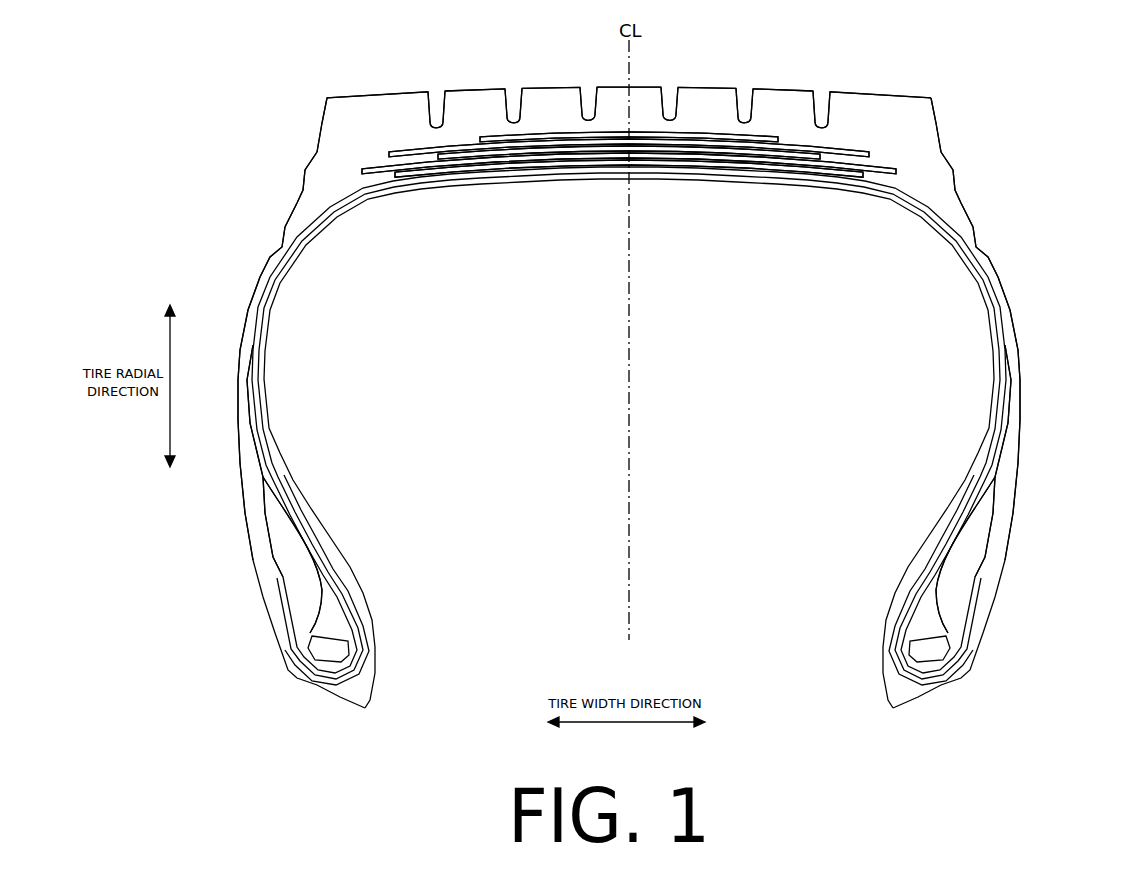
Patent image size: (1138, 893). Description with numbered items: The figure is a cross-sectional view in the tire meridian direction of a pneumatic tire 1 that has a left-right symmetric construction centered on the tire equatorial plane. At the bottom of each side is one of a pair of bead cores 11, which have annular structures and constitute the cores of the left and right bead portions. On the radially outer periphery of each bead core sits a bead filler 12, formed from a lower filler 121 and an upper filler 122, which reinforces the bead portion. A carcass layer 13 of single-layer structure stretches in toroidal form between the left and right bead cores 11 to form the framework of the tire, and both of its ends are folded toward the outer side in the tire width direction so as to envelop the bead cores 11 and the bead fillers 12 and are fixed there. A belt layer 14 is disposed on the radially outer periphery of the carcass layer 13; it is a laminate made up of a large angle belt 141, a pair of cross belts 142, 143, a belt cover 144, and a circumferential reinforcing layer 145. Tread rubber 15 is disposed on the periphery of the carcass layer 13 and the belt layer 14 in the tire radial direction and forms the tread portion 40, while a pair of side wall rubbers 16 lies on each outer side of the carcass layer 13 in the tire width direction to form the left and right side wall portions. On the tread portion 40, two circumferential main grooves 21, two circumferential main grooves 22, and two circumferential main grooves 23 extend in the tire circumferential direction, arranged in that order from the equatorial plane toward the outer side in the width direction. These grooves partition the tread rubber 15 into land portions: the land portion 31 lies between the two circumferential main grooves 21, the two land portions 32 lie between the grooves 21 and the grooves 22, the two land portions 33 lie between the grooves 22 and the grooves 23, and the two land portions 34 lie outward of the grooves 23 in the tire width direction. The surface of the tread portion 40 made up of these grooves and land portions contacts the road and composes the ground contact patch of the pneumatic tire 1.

The pneumatic tire 1 is at (991, 84).
The bead core 11 is at (320, 645).
The bead filler 12 is at (188, 553).
The lower filler 121 is at (323, 597).
The upper filler 122 is at (290, 563).
The carcass layer 13 is at (929, 212).
The belt layer 14 is at (880, 238).
The large angle belt 141 is at (850, 175).
The cross belt 142 is at (820, 157).
The cross belt 143 is at (767, 147).
The belt cover 144 is at (735, 150).
The circumferential reinforcing layer 145 is at (692, 140).
The tread rubber 15 is at (767, 87).
The side wall rubber 16 is at (295, 210).
The circumferential main groove 21 is at (590, 93).
The circumferential main groove 22 is at (512, 95).
The circumferential main groove 23 is at (435, 94).
The land portion 31 is at (650, 85).
The land portion 32 is at (550, 86).
The land portion 33 is at (468, 88).
The land portion 34 is at (383, 92).
The tread portion 40 is at (906, 86).